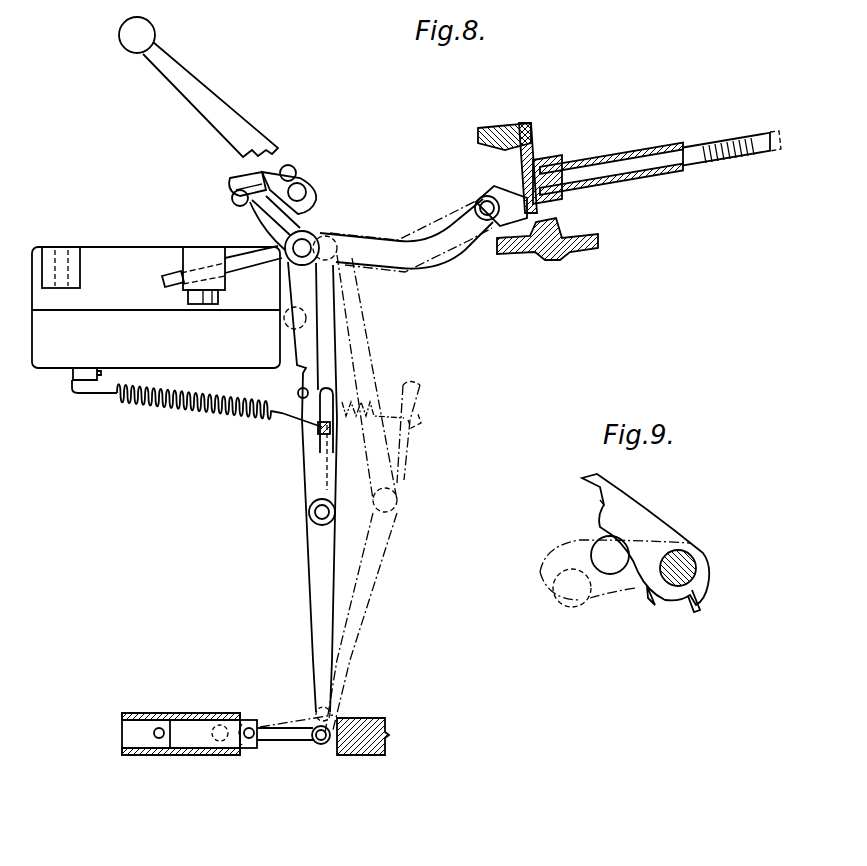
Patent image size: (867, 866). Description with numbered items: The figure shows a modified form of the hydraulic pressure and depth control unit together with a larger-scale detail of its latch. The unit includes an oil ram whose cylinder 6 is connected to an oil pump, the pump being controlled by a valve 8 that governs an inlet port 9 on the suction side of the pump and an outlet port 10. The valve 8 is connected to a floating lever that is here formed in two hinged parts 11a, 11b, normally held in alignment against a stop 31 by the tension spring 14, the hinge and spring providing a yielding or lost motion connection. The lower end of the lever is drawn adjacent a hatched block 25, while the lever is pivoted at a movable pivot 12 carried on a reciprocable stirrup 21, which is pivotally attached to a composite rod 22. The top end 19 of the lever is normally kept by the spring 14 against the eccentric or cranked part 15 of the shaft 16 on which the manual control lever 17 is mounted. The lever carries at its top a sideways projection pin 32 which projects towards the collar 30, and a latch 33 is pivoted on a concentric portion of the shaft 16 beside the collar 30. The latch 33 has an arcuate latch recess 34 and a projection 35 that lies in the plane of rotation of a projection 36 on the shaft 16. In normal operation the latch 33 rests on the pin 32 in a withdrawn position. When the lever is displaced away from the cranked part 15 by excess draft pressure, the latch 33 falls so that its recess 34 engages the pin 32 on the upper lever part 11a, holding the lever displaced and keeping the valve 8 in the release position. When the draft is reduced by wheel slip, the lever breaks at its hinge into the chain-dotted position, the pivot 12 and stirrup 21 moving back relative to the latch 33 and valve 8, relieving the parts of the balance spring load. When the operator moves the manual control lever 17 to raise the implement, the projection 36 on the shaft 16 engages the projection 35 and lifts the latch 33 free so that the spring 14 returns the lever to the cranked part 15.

In FIG. 8, the cylinder 6 is at (58, 360).
In FIG. 8, the valve 8 is at (193, 746).
In FIG. 8, the inlet port 9 is at (226, 724).
In FIG. 8, the outlet port 10 is at (159, 727).
In FIG. 8, the upper lever part 11a is at (330, 353).
In FIG. 8, the lower lever part 11b is at (330, 548).
In FIG. 8, the pivot 12 is at (335, 232).
In FIG. 8, the tension spring 14 is at (136, 405).
In FIG. 8, the eccentric or cranked part 15 is at (293, 170).
In FIG. 9, the shaft 16 is at (700, 570).
In FIG. 8, the manual control lever 17 is at (217, 104).
In FIG. 8, the top end of lever 19 is at (255, 178).
In FIG. 8, the reciprocable stirrup 21 is at (426, 258).
In FIG. 8, the composite rod 22 is at (698, 164).
In FIG. 8, the pivot block 25 is at (358, 755).
In FIG. 8, the collar 30 is at (309, 515).
In FIG. 8, the stop 31 is at (298, 393).
In FIG. 8, the projection pin 32 is at (233, 200).
In FIG. 9, the projection pin 32 is at (570, 548).
In FIG. 8, the latch 33 is at (280, 172).
In FIG. 9, the latch 33 is at (665, 522).
In FIG. 8, the arcuate latch recess 34 is at (235, 193).
In FIG. 9, the arcuate latch recess 34 is at (603, 508).
In FIG. 8, the projection 35 is at (276, 208).
In FIG. 9, the projection 35 is at (655, 603).
In FIG. 8, the projection 36 is at (308, 206).
In FIG. 9, the projection 36 is at (703, 602).